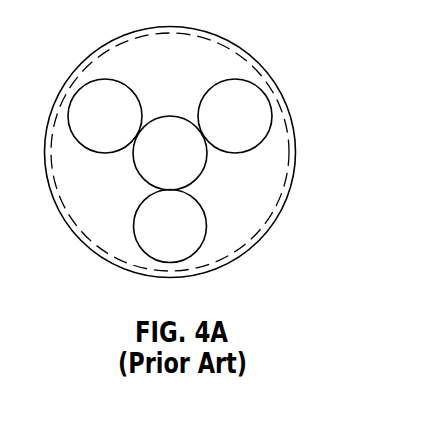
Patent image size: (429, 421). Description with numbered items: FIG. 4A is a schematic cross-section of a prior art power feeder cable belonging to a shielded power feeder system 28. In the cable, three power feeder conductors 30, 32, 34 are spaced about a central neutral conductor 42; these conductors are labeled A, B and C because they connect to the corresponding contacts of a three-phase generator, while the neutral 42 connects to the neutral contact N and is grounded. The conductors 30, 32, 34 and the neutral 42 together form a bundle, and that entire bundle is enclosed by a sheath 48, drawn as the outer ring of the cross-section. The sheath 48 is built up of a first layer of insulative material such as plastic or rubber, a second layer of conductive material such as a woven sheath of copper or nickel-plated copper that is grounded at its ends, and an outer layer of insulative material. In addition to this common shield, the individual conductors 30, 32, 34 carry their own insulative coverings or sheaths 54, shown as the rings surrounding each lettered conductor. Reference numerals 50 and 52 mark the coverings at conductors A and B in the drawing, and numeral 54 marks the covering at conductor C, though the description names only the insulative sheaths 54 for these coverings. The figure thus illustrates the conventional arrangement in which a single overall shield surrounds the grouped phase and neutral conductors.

The shielded power feeder system 28 is at (296, 162).
The sheath 48 is at (283, 208).
The power feeder conductor 30 is at (88, 100).
The power feeder conductor 32 is at (255, 117).
The power feeder conductor 34 is at (148, 254).
The neutral conductor 42 is at (148, 163).
The insulation of phase A conductor 50 is at (87, 99).
The insulation of phase B conductor 52 is at (257, 99).
The insulative coverings or sheaths 54 is at (175, 244).